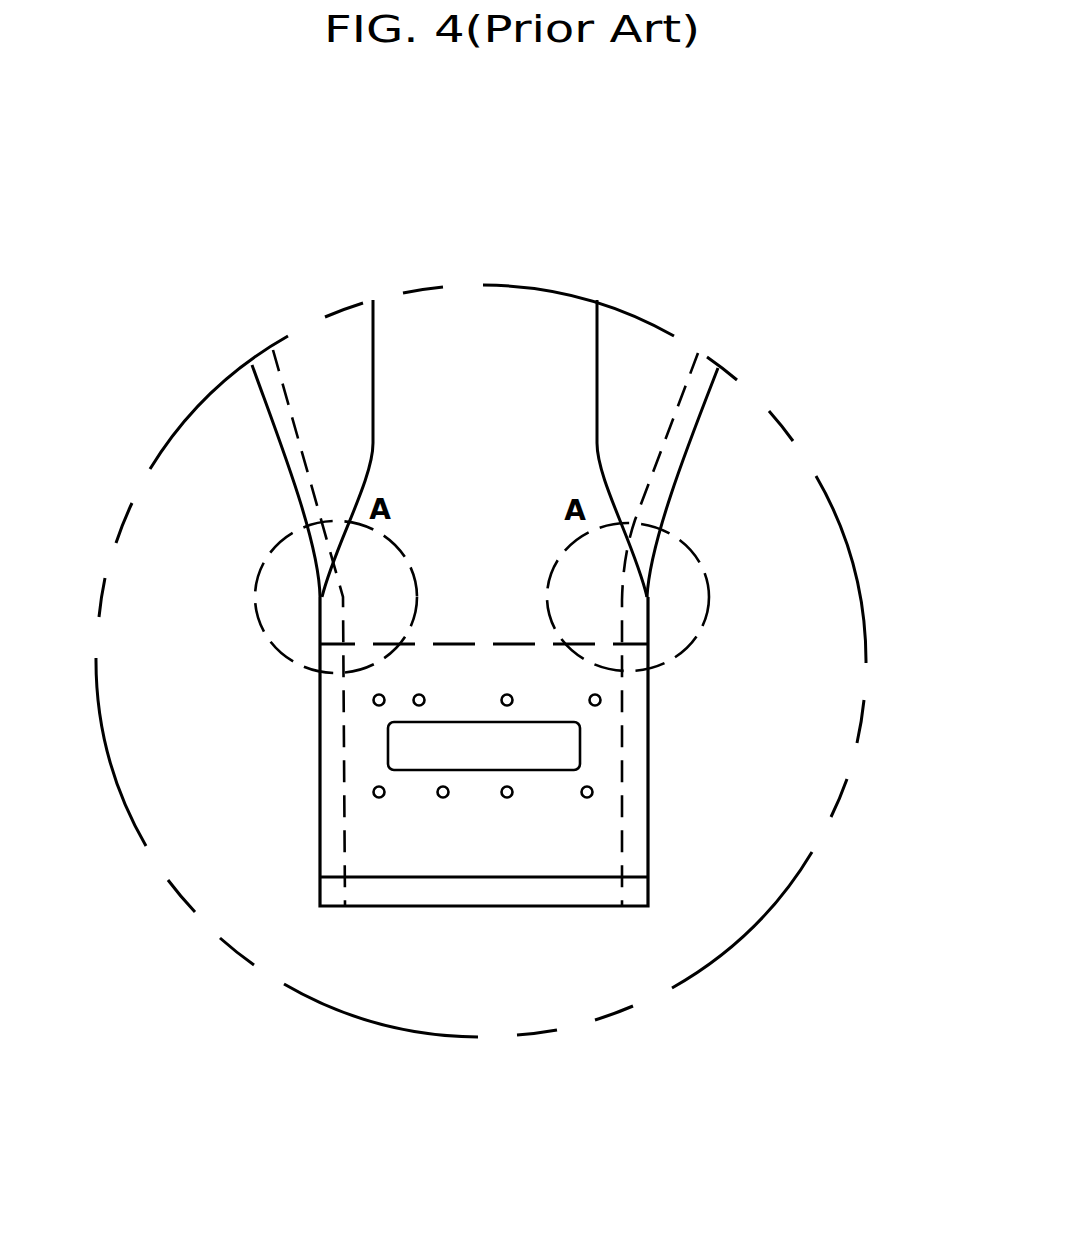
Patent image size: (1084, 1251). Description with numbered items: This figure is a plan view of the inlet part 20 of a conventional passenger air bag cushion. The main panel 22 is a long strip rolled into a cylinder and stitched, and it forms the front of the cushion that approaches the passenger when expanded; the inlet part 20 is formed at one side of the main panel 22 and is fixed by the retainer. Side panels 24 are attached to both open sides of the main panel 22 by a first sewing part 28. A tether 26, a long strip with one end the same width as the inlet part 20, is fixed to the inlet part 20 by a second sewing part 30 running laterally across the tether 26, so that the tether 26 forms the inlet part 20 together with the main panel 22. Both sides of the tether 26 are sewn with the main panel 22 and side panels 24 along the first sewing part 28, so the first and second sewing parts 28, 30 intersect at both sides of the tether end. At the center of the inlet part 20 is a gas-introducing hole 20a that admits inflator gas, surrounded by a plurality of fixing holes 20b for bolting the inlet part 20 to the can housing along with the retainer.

The inlet part 20 is at (652, 756).
The gas-introducing hole 20a is at (415, 753).
The fixing holes 20b is at (443, 800).
The main panel 22 is at (633, 347).
The side panels 24 is at (782, 495).
The tether 26 is at (484, 314).
The first sewing part 28 is at (267, 395).
The second sewing part 30 is at (447, 644).